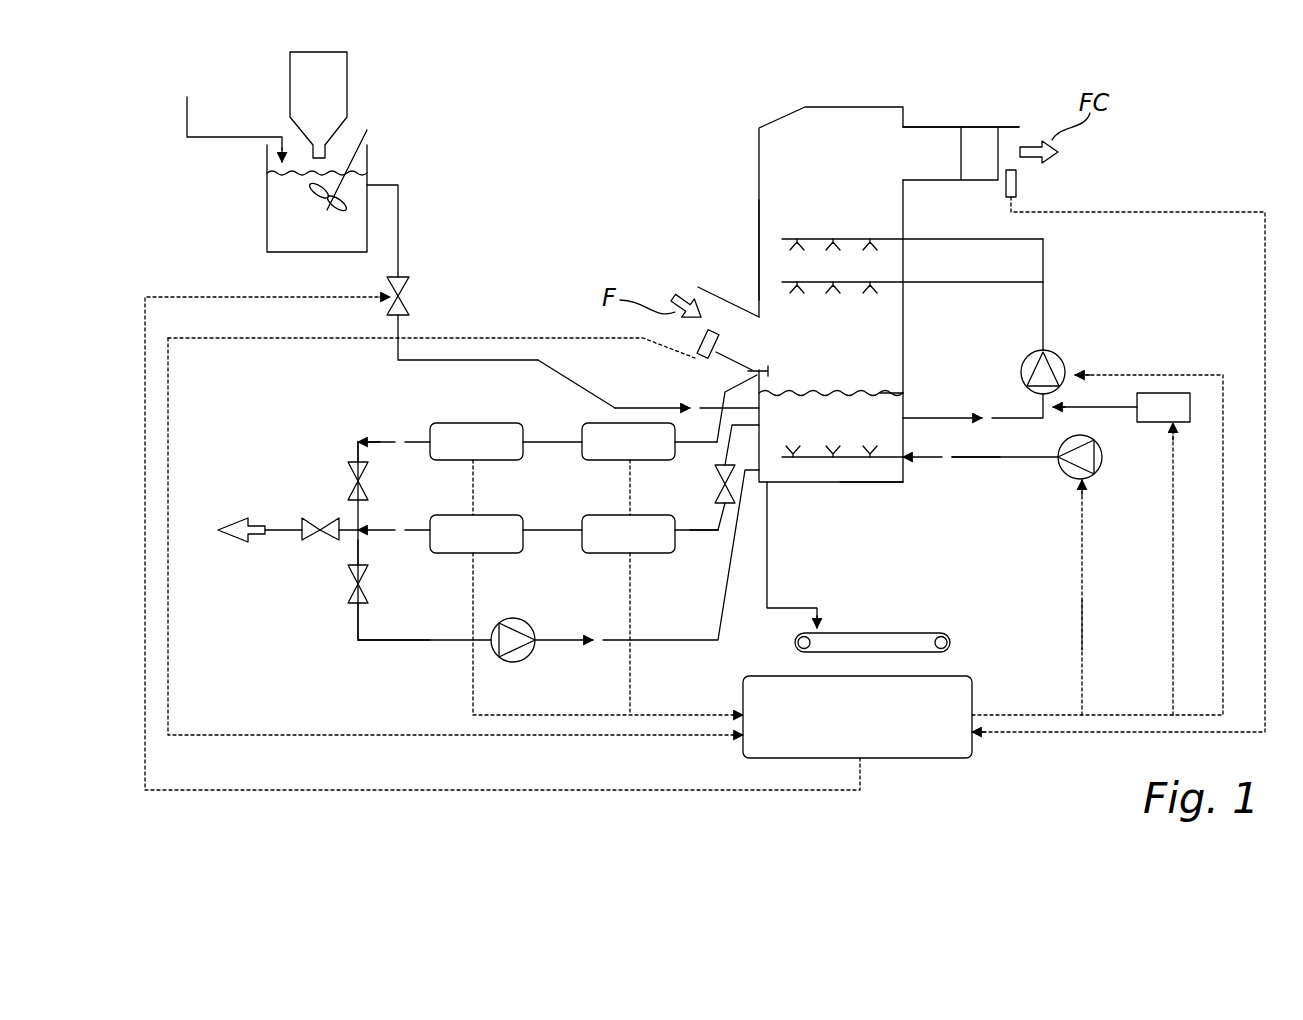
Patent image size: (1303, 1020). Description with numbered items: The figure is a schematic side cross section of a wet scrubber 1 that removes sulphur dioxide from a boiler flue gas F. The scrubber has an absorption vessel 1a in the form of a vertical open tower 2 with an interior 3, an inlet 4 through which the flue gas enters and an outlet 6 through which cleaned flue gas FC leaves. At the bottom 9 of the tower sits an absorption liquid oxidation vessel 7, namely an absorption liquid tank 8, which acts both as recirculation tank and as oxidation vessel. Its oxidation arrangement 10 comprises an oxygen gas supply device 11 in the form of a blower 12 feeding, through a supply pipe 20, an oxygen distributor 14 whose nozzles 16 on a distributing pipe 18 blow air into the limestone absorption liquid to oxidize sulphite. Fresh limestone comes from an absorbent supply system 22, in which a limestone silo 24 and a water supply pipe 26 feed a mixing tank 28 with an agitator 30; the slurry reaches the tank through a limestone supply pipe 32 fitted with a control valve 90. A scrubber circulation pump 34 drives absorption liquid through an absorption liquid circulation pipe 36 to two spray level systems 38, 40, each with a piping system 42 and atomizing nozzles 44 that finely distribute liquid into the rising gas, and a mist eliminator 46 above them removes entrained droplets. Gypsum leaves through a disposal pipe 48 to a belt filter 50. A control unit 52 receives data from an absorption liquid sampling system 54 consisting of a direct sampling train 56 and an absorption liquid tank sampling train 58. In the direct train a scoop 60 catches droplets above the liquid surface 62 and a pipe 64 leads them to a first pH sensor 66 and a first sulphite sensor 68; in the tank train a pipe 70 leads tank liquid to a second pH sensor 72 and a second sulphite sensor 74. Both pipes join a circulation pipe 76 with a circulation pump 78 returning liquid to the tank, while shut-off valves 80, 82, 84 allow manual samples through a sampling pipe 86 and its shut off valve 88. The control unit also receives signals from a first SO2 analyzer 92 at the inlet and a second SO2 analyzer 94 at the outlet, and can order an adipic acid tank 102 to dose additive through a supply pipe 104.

The wet scrubber 1 is at (822, 205).
The absorption vessel 1a is at (768, 318).
The vertical open tower 2 is at (727, 250).
The interior 3 is at (831, 370).
The inlet 4 is at (689, 265).
The outlet 6 is at (971, 113).
The absorption liquid oxidation vessel 7 is at (879, 531).
The absorption liquid tank 8 is at (884, 522).
The bottom 9 is at (913, 490).
The oxidation arrangement 10 is at (976, 502).
The oxygen gas supply device 11 is at (1102, 574).
The blower 12 is at (1103, 480).
The oxygen distributor 14 is at (839, 493).
The nozzles 16 is at (826, 493).
The distributing pipe 18 is at (866, 493).
The supply pipe 20 is at (1041, 509).
The absorbent supply system 22 is at (432, 113).
The limestone silo 24 is at (361, 105).
The water supply pipe 26 is at (234, 115).
The mixing tank 28 is at (275, 198).
The agitator 30 is at (328, 213).
The limestone supply pipe 32 is at (452, 269).
The scrubber circulation pump 34 is at (1072, 344).
The absorption liquid circulation pipe 36 is at (1082, 294).
The spray level system 38 is at (840, 180).
The spray level system 40 is at (816, 224).
The piping system 42 is at (912, 331).
The atomizing nozzles 44 is at (776, 257).
The mist eliminator 46 is at (961, 79).
The disposal pipe 48 is at (763, 577).
The belt filter 50 is at (872, 614).
The control unit 52 is at (857, 756).
The absorption liquid sampling system 54 is at (301, 655).
The direct sampling train 56 is at (311, 434).
The absorption liquid tank sampling train 58 is at (319, 568).
The scoop 60 is at (711, 373).
The surface 62 is at (910, 362).
The pipe 64 is at (370, 411).
The first pH sensor 66 is at (623, 467).
The first sulphite sensor 68 is at (476, 417).
The pipe 70 is at (696, 568).
The second pH sensor 72 is at (625, 558).
The second sulphite sensor 74 is at (472, 561).
The circulation pipe 76 is at (376, 673).
The circulation pump 78 is at (484, 662).
The shut-off valve 80 is at (320, 481).
The shut-off valve 82 is at (700, 484).
The shut-off valve 84 is at (306, 604).
The sampling pipe 86 is at (242, 500).
The shut off valve 88 is at (282, 547).
The control valve 90 is at (438, 272).
The first SO2 analyzer 92 is at (751, 350).
The second SO2 analyzer 94 is at (1061, 171).
The adipic acid tank 102 is at (1186, 364).
The supply pipe 104 is at (1106, 441).